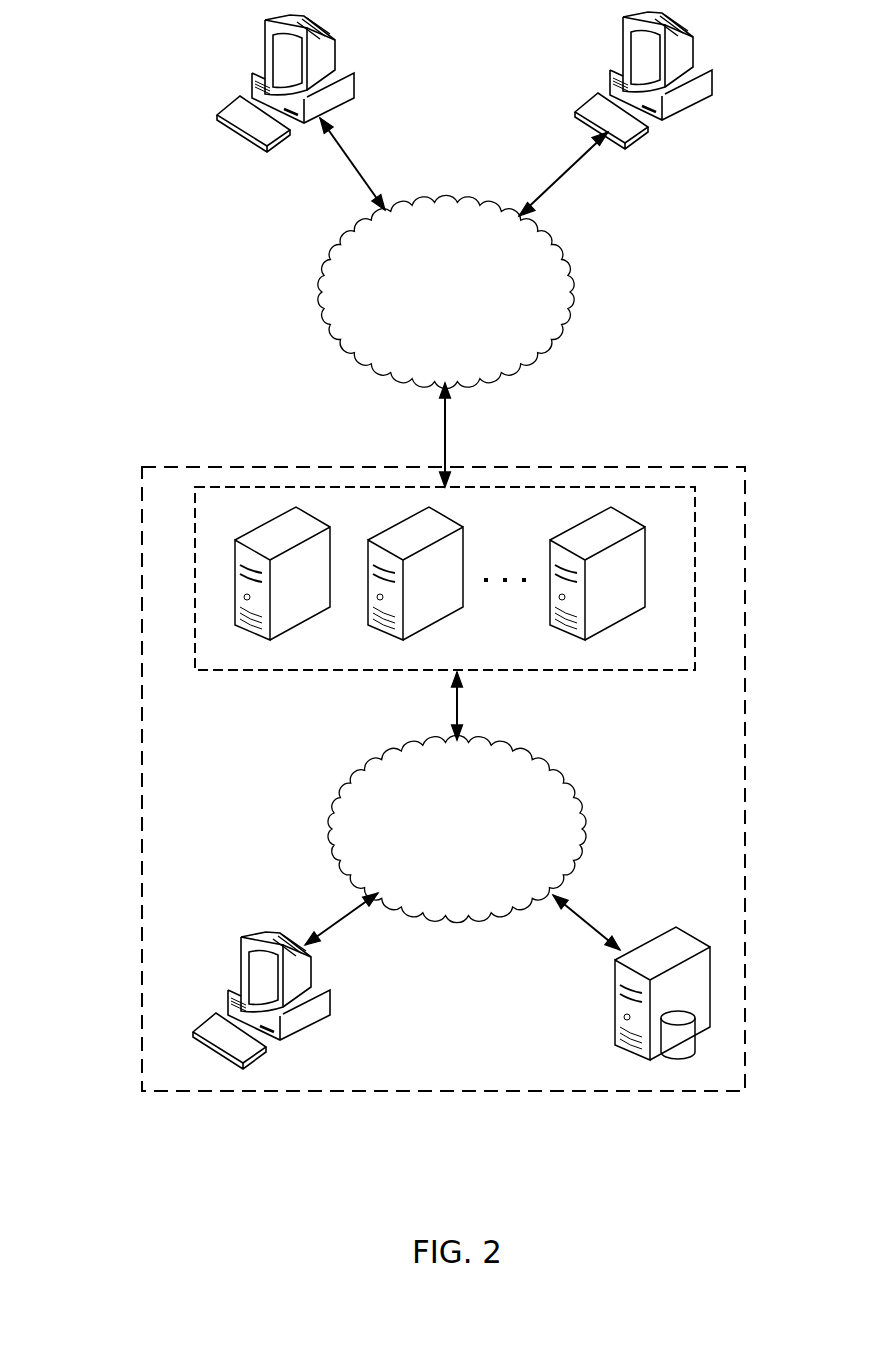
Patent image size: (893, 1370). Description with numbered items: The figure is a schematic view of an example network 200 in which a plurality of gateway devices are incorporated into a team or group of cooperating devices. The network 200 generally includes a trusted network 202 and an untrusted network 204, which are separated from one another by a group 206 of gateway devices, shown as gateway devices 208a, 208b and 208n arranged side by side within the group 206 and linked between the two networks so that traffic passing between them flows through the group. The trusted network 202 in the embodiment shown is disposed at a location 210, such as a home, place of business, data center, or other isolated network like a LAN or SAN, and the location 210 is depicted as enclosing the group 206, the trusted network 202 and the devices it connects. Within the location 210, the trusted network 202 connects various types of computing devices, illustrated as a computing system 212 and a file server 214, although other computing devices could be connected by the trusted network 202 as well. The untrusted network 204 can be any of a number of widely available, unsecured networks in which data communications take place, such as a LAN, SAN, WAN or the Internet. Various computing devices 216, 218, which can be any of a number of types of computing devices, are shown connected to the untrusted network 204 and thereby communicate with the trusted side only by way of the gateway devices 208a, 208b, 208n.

The network 200 is at (132, 1160).
The trusted network 202 is at (439, 801).
The untrusted network 204 is at (428, 254).
The group of gateway devices 206 is at (287, 672).
The gateway device 208a is at (295, 628).
The gateway device 208b is at (428, 628).
The gateway device 208n is at (607, 630).
The location 210 is at (438, 1052).
The computing system 212 is at (240, 970).
The file server 214 is at (698, 942).
The computing device 216 is at (336, 53).
The computing device 218 is at (695, 52).